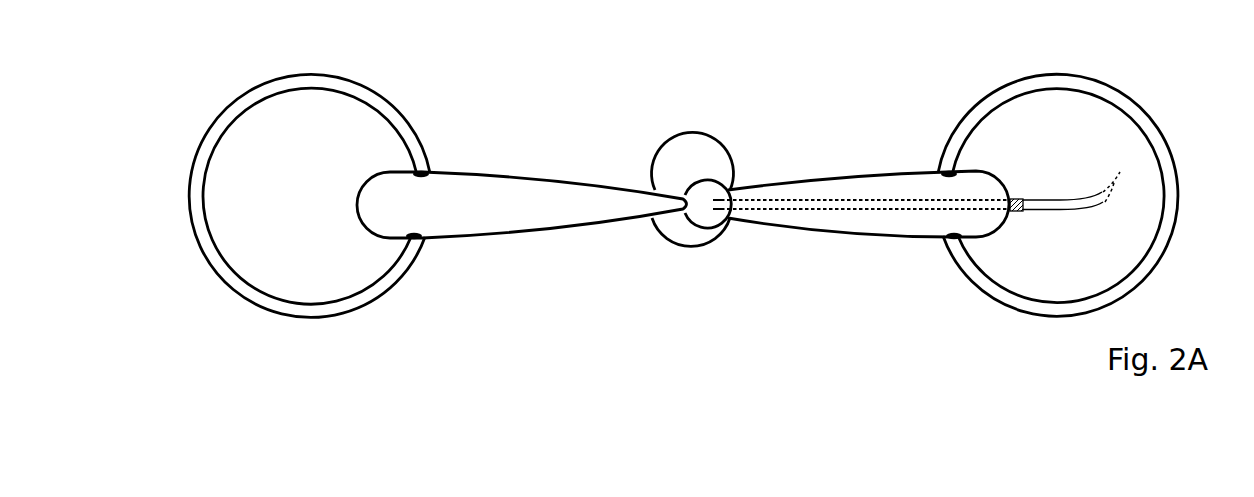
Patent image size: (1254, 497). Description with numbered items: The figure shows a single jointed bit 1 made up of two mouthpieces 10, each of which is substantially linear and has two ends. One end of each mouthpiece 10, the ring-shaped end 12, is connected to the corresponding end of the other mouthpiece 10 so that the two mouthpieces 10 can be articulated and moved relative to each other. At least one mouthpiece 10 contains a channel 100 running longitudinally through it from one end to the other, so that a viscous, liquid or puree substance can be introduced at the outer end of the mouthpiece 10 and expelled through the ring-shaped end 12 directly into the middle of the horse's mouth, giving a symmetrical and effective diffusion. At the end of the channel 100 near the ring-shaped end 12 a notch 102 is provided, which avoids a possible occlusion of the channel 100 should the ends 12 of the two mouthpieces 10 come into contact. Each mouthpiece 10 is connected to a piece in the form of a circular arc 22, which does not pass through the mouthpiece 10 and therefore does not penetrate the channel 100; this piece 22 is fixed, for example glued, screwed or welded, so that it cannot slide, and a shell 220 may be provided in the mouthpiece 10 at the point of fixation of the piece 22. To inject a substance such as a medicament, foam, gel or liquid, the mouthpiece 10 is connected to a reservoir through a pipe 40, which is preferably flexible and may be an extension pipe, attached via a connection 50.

The bit 1 is at (695, 210).
The mouthpiece 10 is at (497, 227).
The ring-shaped end 12 is at (685, 235).
The piece in the form of a circular arc 22 is at (268, 302).
The pipe 40 is at (1070, 212).
The connection 50 is at (1015, 200).
The channel 100 is at (833, 205).
The notch 102 is at (713, 203).
The shell 220 is at (955, 168).